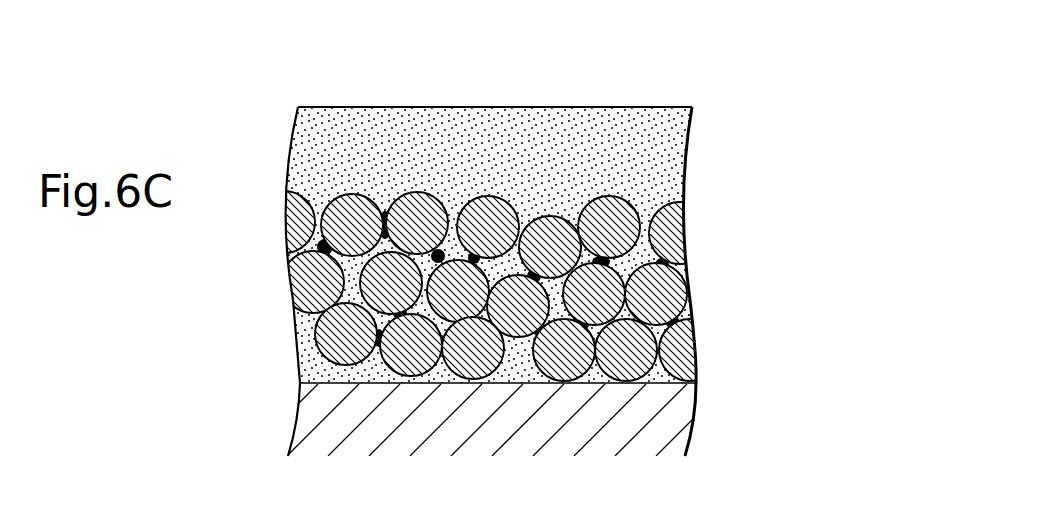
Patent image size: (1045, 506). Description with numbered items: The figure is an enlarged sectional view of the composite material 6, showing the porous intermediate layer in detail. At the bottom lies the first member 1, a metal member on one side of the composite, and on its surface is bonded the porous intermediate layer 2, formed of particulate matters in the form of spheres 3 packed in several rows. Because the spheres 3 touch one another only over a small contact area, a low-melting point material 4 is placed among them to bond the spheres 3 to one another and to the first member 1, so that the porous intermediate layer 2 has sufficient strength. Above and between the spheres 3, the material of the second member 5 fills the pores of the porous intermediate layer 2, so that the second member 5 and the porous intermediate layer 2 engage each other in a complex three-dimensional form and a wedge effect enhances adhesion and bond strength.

The first member 1 is at (673, 438).
The porous intermediate layer 2 is at (529, 286).
The spheres 3 is at (662, 290).
The low-melting point material 4 is at (690, 310).
The second member 5 is at (655, 177).
The composite material 6 is at (525, 233).